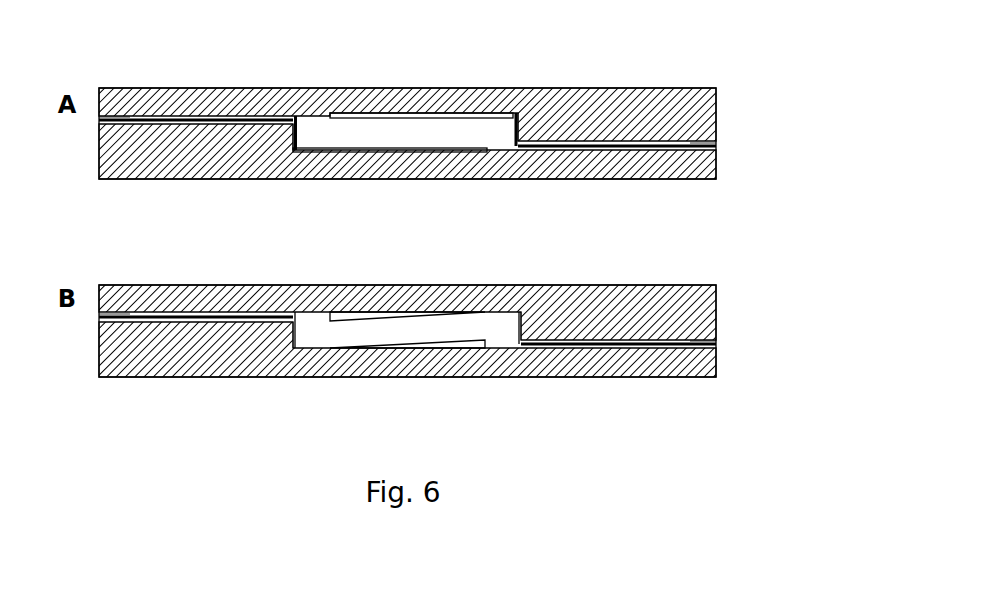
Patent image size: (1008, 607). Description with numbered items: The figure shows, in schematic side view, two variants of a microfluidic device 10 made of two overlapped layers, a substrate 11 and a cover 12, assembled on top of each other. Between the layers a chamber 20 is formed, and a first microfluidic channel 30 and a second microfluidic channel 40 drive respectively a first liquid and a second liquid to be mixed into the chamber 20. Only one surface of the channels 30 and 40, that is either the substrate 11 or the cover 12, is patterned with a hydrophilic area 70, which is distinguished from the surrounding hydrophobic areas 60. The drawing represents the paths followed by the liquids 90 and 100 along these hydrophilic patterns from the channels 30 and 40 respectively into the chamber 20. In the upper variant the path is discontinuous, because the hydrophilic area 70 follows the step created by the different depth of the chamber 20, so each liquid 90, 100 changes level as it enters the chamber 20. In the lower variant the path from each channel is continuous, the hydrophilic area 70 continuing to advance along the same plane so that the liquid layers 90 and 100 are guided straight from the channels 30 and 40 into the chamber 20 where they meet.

In FIG. 6A, the device 10 is at (662, 88).
In FIG. 6B, the device 10 is at (663, 285).
In FIG. 6A, the substrate 11 is at (185, 165).
In FIG. 6B, the substrate 11 is at (182, 362).
In FIG. 6A, the cover 12 is at (248, 102).
In FIG. 6B, the cover 12 is at (258, 298).
In FIG. 6A, the chamber 20 is at (405, 131).
In FIG. 6B, the chamber 20 is at (407, 330).
In FIG. 6A, the microfluidic channel 30 is at (100, 121).
In FIG. 6B, the microfluidic channel 30 is at (98, 319).
In FIG. 6A, the microfluidic channel 40 is at (716, 145).
In FIG. 6B, the microfluidic channel 40 is at (717, 343).
In FIG. 6A, the hydrophobic area 60 is at (310, 113).
In FIG. 6B, the hydrophobic area 60 is at (523, 290).
In FIG. 6A, the hydrophilic area 70 is at (388, 117).
In FIG. 6B, the hydrophilic area 70 is at (363, 317).
In FIG. 6A, the liquid 90 is at (268, 172).
In FIG. 6B, the liquid 90 is at (227, 319).
In FIG. 6A, the liquid 100 is at (513, 117).
In FIG. 6B, the liquid 100 is at (577, 342).